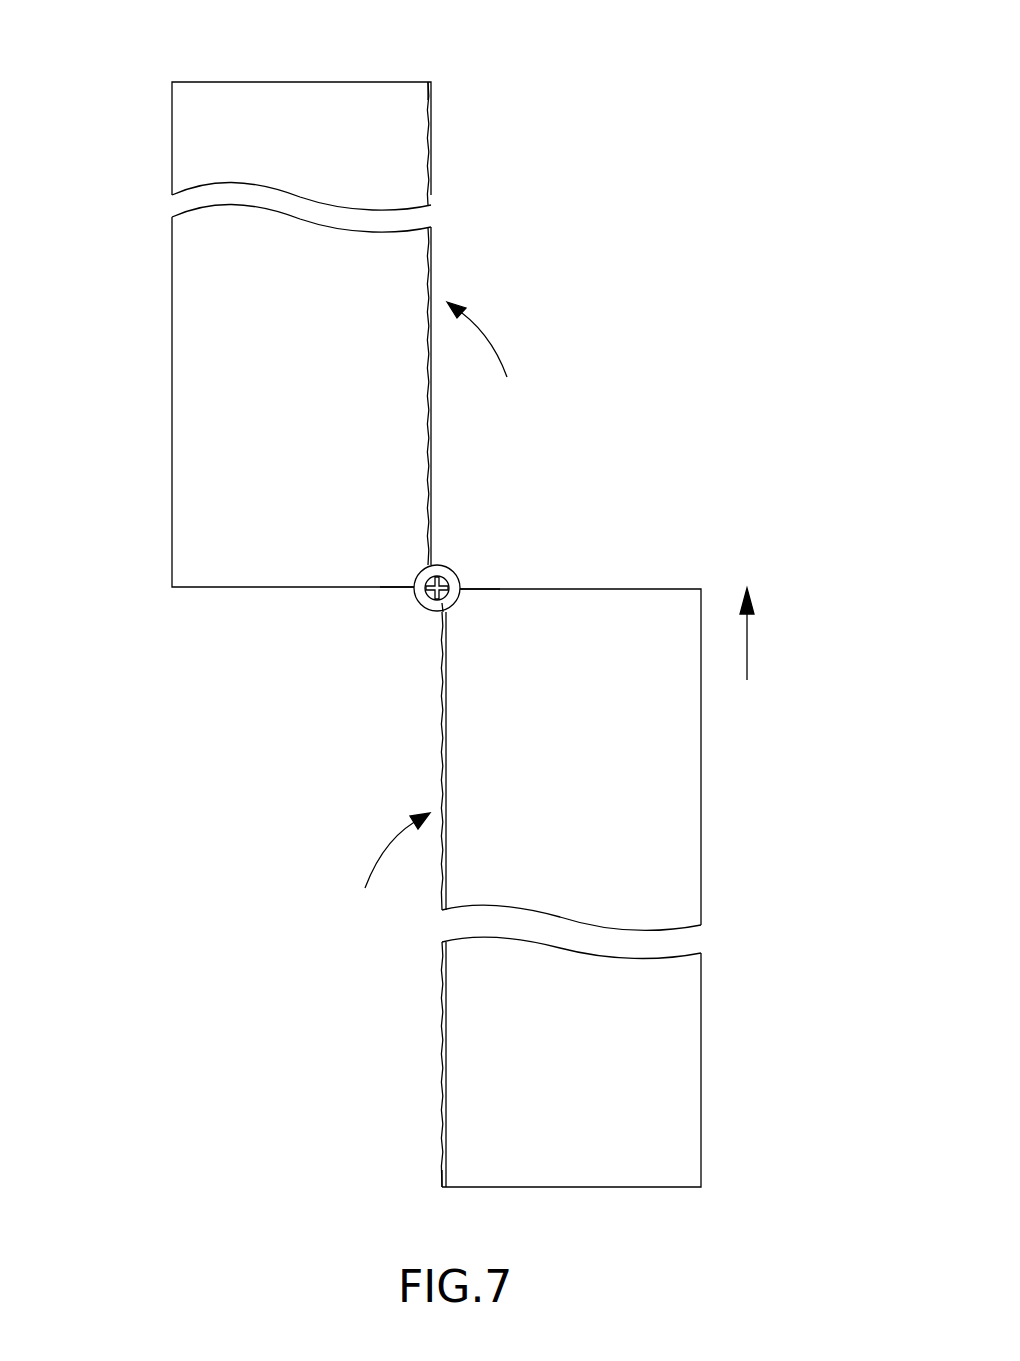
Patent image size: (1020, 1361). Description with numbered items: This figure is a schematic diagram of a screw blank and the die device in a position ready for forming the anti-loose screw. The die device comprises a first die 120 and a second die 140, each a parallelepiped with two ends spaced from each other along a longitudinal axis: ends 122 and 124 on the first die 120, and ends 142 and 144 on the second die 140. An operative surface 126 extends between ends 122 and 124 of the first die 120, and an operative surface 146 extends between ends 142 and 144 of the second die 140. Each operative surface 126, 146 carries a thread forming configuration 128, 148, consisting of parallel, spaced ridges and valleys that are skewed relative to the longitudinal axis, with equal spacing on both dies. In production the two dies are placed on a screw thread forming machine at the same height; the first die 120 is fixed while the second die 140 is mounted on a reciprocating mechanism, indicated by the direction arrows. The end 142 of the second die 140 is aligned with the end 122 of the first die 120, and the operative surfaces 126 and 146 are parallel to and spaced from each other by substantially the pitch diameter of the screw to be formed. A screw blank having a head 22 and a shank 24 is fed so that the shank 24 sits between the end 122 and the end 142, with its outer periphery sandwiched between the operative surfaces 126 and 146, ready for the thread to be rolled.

The first die 120 is at (193, 383).
The end of first die 122 is at (402, 588).
The end of first die 124 is at (422, 82).
The operative surface 126 is at (432, 258).
The thread forming configuration 128 is at (495, 356).
The head 22 is at (438, 565).
The shank 24 is at (443, 603).
The second die 140 is at (682, 778).
The end of second die 142 is at (468, 588).
The end of second die 144 is at (450, 1190).
The operative surface 146 is at (443, 1000).
The thread forming configuration 148 is at (389, 866).